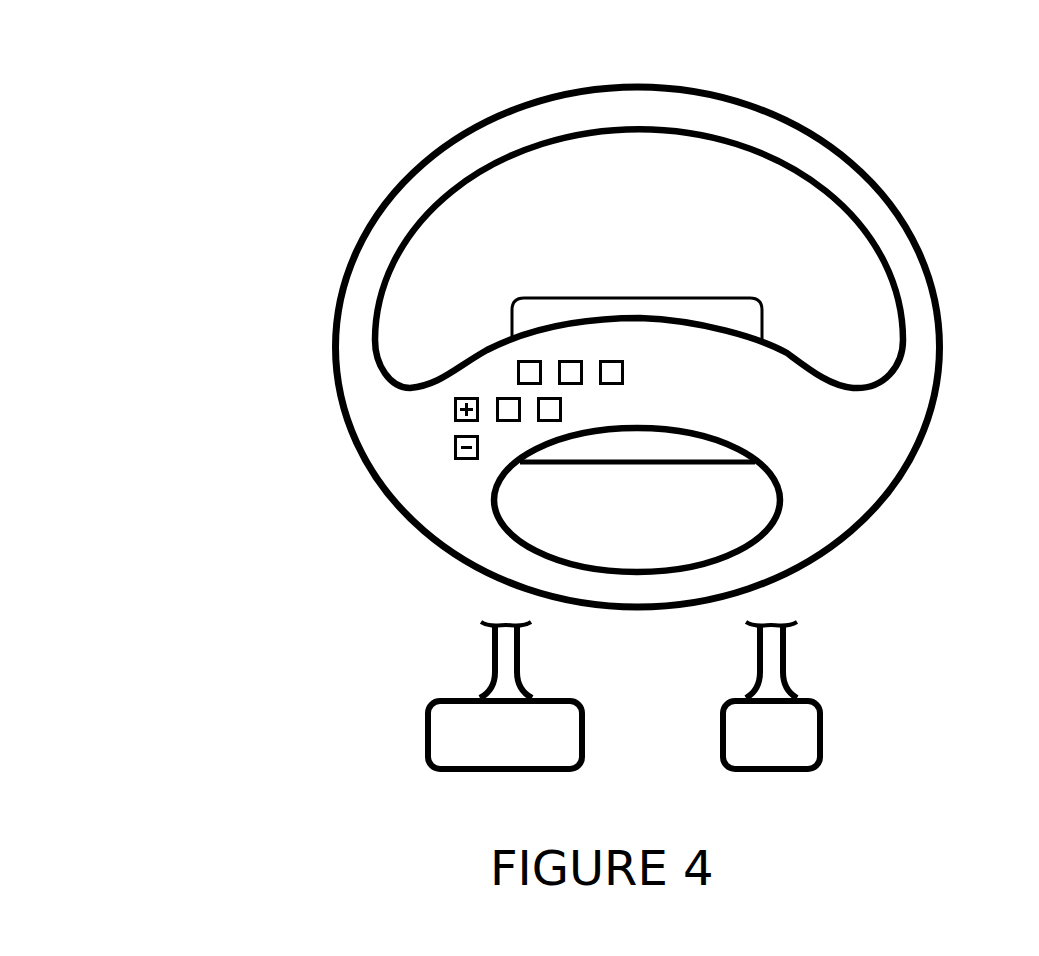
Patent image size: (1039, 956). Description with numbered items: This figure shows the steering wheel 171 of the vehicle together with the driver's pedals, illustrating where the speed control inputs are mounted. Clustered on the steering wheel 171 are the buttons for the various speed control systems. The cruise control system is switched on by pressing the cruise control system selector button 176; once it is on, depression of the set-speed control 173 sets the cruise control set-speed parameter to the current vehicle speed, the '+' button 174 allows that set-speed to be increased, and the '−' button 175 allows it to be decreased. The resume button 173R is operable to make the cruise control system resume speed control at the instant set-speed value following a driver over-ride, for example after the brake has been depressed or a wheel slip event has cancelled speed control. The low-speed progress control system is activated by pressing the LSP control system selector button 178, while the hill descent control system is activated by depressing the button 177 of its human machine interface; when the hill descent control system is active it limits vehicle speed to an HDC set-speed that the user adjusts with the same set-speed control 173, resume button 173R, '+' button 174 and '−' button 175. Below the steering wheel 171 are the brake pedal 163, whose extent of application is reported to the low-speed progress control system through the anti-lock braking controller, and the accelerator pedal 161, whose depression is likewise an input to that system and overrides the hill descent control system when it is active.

The steering wheel 171 is at (911, 297).
The set-speed control 173 is at (498, 402).
The resume button 173R is at (550, 422).
The '+' button 174 is at (455, 404).
The '−' button 175 is at (455, 452).
The cruise control system selector button 176 is at (537, 360).
The HDC system button 177 is at (569, 360).
The LSP control system selector button 178 is at (616, 360).
The brake pedal 163 is at (443, 728).
The accelerator pedal 161 is at (802, 728).